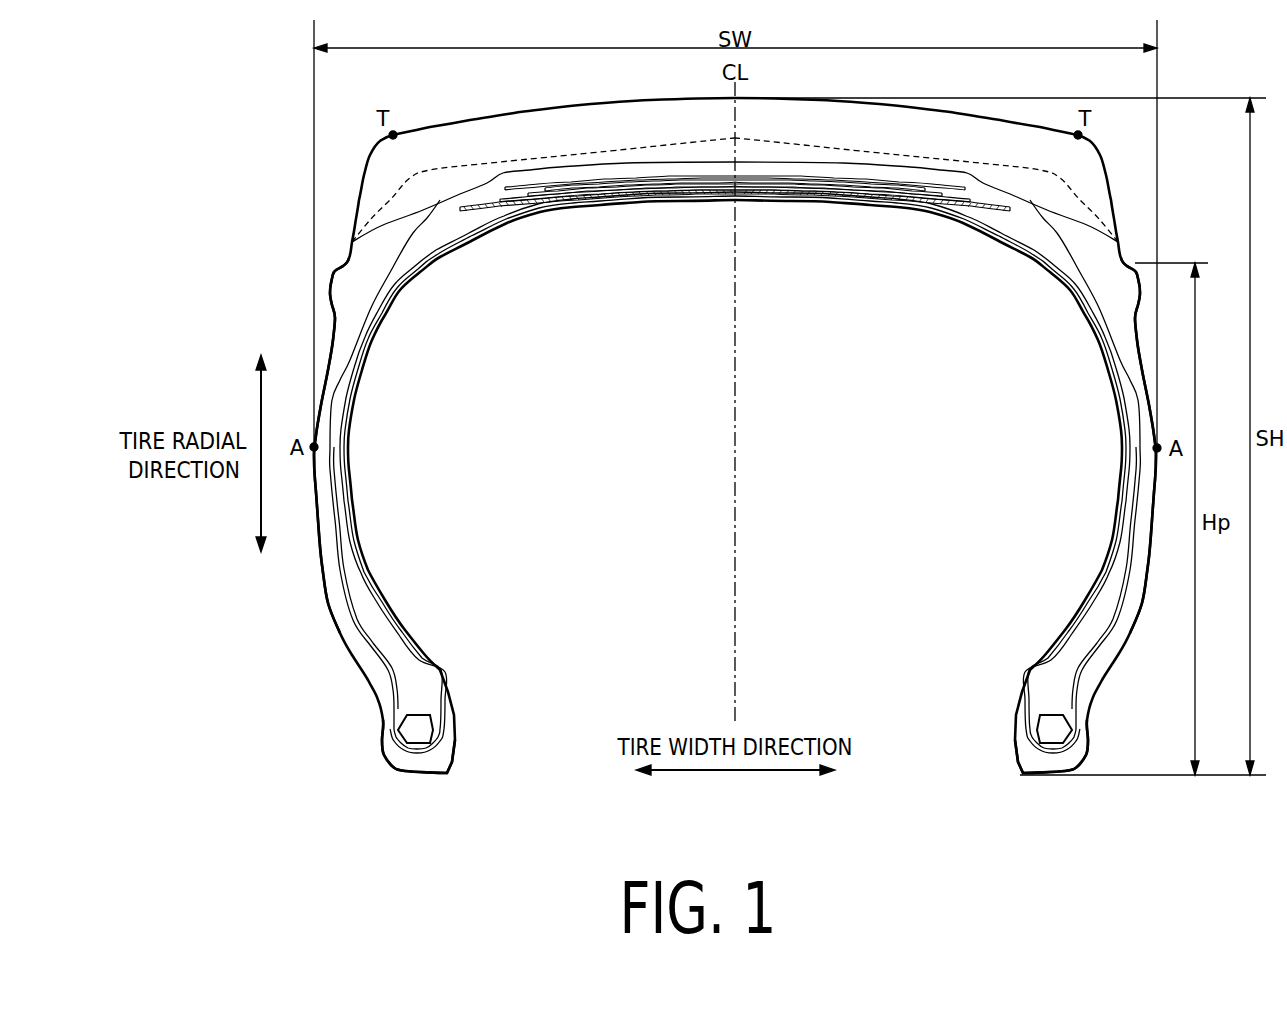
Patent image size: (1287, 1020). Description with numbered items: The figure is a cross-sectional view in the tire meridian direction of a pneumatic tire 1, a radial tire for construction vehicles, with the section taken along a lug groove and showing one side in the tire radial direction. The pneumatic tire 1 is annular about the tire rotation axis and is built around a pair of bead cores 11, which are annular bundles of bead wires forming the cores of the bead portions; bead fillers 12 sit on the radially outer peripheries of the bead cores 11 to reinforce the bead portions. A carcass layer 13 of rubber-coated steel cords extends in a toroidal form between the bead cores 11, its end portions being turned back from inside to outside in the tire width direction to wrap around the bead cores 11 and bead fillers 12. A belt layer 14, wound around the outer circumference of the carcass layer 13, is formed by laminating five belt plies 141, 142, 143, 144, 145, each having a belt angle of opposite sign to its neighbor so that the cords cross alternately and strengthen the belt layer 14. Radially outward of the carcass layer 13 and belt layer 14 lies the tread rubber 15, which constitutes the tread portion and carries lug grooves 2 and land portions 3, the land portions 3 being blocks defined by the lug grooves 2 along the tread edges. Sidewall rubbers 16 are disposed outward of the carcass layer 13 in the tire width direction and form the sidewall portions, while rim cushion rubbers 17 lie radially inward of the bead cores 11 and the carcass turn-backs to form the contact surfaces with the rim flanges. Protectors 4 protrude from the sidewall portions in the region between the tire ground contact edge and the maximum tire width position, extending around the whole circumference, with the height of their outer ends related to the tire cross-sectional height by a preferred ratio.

The pneumatic tire 1 is at (1134, 135).
The lug groove 2 is at (947, 153).
The land portion 3 is at (1019, 119).
The protector 4 is at (330, 291).
The bead core 11 is at (434, 719).
The bead filler 12 is at (418, 690).
The carcass layer 13 is at (1040, 268).
The belt layer 14 is at (735, 244).
The belt ply 141 is at (773, 196).
The belt ply 142 is at (817, 194).
The belt ply 143 is at (860, 192).
The belt ply 144 is at (887, 189).
The belt ply 145 is at (765, 270).
The tread rubber 15 is at (1116, 205).
The sidewall rubber 16 is at (1140, 357).
The rim cushion rubber 17 is at (456, 756).